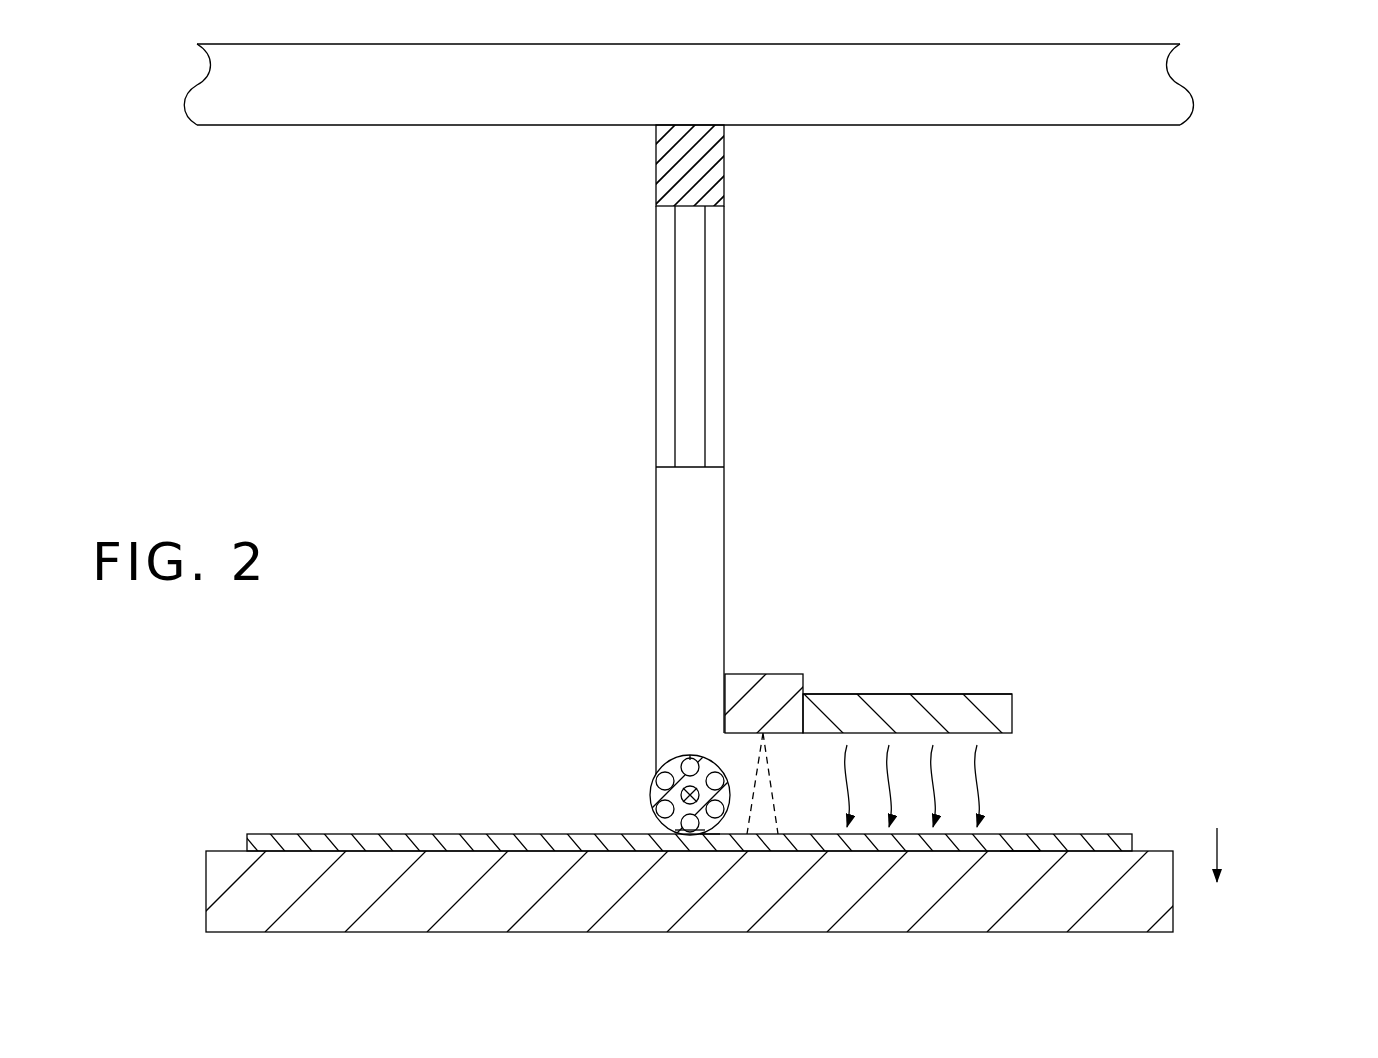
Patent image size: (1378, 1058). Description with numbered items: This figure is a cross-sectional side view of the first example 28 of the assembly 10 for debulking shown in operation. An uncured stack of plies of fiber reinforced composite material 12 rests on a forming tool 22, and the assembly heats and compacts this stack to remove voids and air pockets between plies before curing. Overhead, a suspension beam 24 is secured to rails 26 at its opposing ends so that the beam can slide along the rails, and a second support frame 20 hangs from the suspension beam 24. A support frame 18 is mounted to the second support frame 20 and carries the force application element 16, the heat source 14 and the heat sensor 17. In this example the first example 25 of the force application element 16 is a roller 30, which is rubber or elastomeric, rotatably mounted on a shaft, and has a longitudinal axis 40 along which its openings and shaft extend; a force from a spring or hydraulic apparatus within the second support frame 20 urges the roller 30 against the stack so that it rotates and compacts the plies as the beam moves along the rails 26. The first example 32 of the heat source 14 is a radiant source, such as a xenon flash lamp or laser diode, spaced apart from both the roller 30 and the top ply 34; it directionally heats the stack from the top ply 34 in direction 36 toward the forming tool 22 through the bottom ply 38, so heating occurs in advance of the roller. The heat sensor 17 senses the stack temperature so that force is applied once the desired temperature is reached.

The assembly for debulking 10 is at (978, 510).
The uncured stack of plies of fiber reinforced composite material 12 is at (1088, 834).
The heat source 14 is at (962, 711).
The force application element 16 is at (719, 838).
The heat sensor 17 is at (760, 682).
The support frame 18 is at (677, 740).
The second support frame 20 is at (714, 322).
The forming tool 22 is at (1162, 916).
The suspension beam 24 is at (662, 168).
The first example of force application element 25 is at (697, 750).
The rails 26 is at (940, 87).
The first example of assembly for debulking 28 is at (864, 458).
The roller 30 is at (684, 798).
The first example of heat source 32 is at (886, 693).
The top ply 34 is at (1020, 834).
The direction 36 is at (1217, 838).
The bottom ply 38 is at (1013, 852).
The longitudinal axis 40 is at (702, 826).